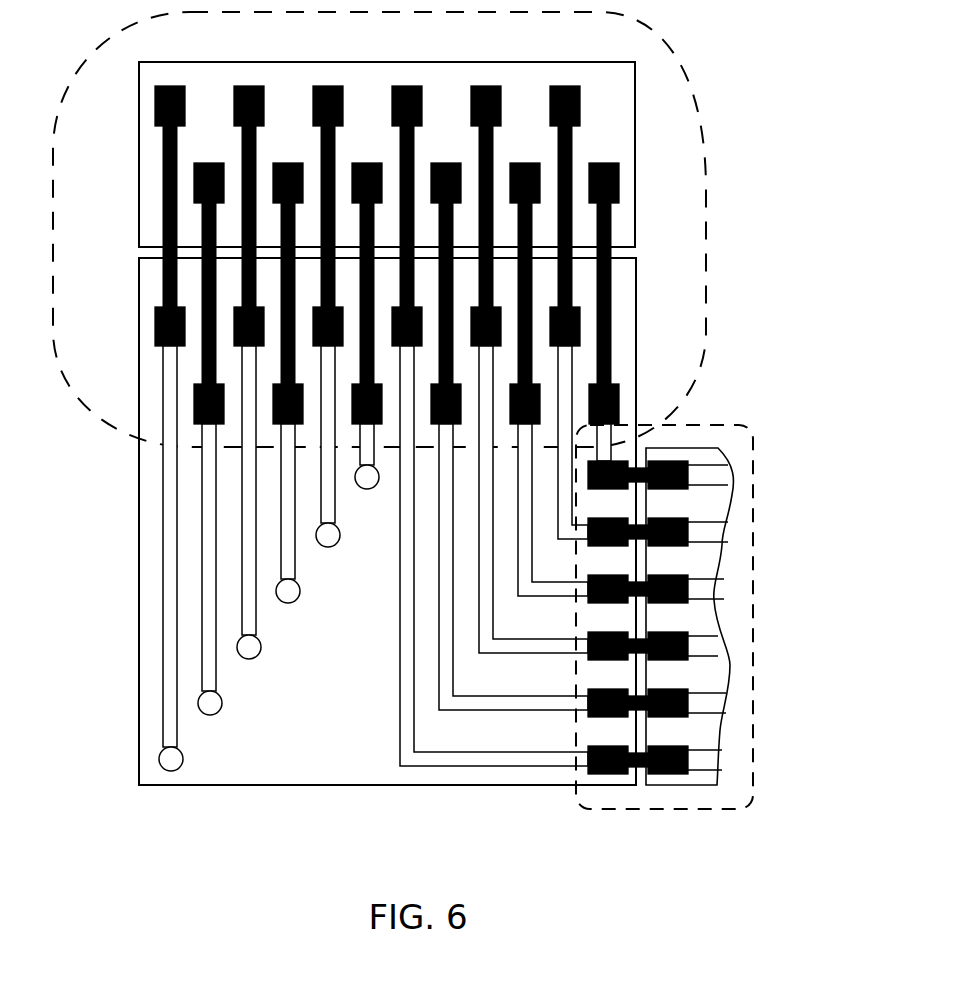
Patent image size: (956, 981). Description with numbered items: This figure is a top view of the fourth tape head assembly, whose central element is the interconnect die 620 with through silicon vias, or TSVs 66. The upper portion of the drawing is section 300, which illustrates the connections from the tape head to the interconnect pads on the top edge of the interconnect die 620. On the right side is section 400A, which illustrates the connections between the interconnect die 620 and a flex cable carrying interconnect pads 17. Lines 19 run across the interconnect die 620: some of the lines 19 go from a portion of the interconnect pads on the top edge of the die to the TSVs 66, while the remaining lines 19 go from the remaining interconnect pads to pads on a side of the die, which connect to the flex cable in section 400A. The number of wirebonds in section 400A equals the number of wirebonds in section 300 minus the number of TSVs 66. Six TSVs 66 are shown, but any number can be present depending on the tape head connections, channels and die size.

The section 300 is at (686, 64).
The section 400A is at (750, 450).
The interconnect pads 17 is at (670, 491).
The lines 19 is at (361, 457).
The through silicon vias (TSVs) 66 is at (356, 480).
The interconnect die 620 is at (287, 788).